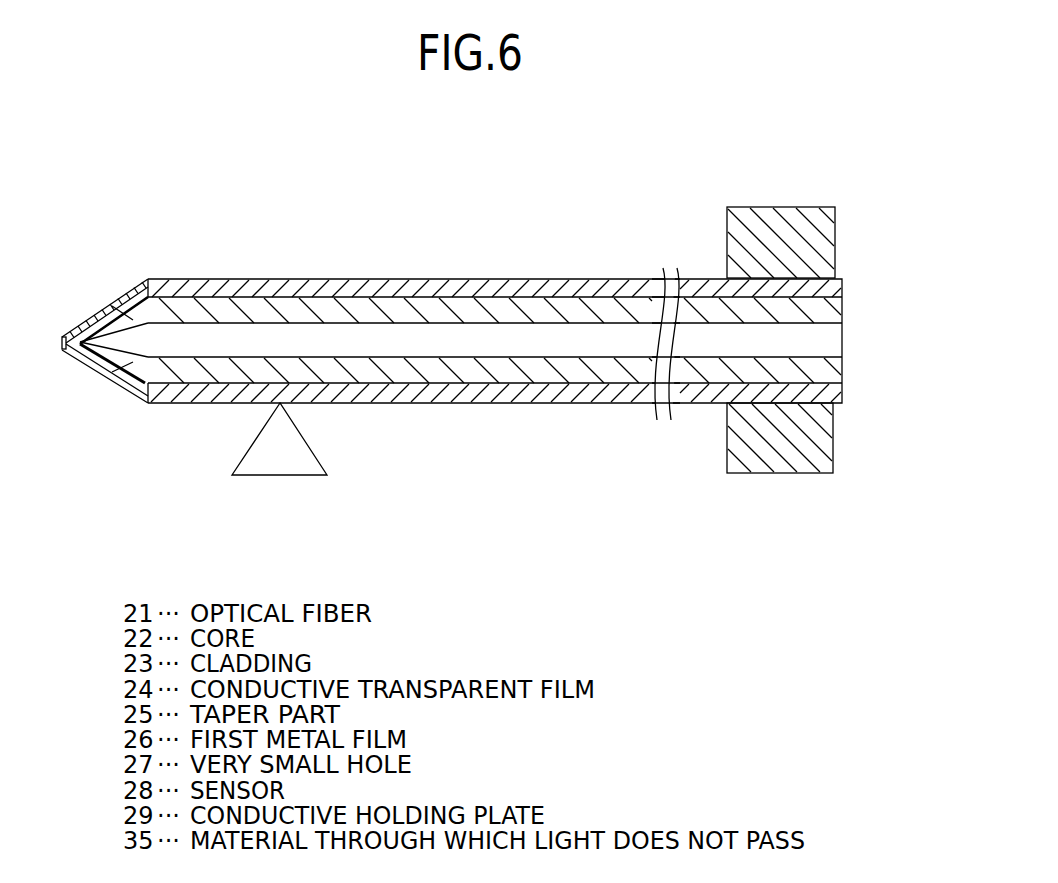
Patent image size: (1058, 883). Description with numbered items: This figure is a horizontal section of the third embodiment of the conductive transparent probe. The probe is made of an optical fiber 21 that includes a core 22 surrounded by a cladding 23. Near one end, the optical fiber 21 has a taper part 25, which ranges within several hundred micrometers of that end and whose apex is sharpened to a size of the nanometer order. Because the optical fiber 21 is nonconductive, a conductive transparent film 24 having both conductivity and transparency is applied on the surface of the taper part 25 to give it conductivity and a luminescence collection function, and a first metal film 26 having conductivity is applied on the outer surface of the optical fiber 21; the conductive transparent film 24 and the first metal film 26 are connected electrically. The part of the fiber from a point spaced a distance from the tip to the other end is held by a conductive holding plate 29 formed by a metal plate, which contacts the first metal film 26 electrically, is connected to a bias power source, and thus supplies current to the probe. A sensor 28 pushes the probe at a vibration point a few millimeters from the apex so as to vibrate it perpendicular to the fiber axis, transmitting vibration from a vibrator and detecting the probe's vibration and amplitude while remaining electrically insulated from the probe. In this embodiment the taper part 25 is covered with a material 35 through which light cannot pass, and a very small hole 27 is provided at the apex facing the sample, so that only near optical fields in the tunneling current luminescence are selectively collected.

The optical fiber 21 is at (468, 369).
The core 22 is at (838, 338).
The cladding 23 is at (838, 366).
The conductive transparent film 24 is at (105, 376).
The taper part 25 is at (137, 371).
The first metal film 26 is at (495, 394).
The very small hole 27 is at (62, 341).
The sensor 28 is at (282, 462).
The conductive holding plate 29 is at (780, 474).
The material through which light does not pass 35 is at (115, 307).